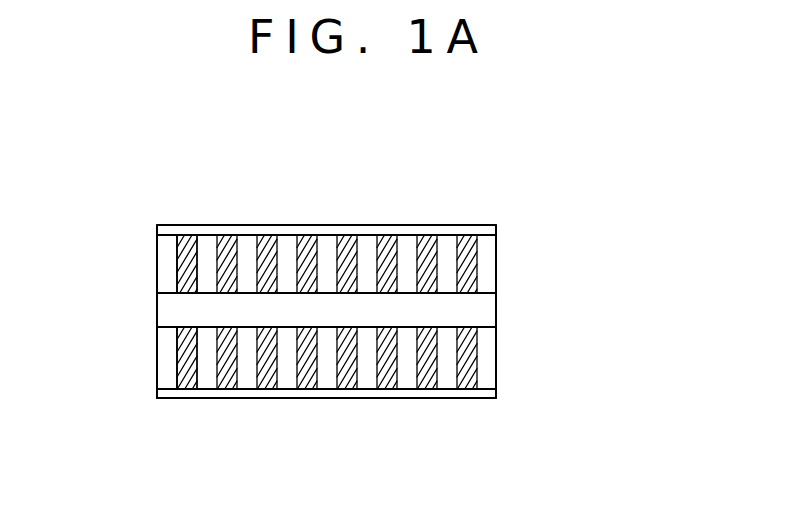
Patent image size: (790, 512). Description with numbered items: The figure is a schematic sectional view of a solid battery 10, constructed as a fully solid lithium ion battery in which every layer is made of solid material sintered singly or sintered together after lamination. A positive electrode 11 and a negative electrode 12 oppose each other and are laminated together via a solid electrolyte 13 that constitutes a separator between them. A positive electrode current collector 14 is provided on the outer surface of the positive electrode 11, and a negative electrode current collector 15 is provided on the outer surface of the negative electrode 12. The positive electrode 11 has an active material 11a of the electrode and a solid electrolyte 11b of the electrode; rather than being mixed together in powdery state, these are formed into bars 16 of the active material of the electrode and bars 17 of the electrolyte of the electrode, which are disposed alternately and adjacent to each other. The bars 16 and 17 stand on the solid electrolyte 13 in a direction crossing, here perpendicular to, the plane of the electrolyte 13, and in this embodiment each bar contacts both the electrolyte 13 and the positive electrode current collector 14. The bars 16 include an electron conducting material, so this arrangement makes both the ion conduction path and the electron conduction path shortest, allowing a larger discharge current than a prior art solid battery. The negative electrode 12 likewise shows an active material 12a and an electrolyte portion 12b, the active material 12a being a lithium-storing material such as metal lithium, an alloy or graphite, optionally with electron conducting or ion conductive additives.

The solid battery 10 is at (489, 194).
The positive electrode 11 is at (613, 218).
The active material of the electrode 11a is at (470, 252).
The solid electrolyte of the electrode 11b is at (488, 280).
The negative electrode 12 is at (613, 325).
The active material of the negative electrode 12a is at (458, 345).
The piezoelectric body of second unit 12b is at (487, 378).
The solid electrolyte 13 is at (480, 312).
The positive electrode current collector 14 is at (385, 236).
The negative electrode current collector 15 is at (406, 393).
The bars of the active material of the electrode 16 is at (188, 262).
The bars of the electrolyte of the electrode 17 is at (167, 279).